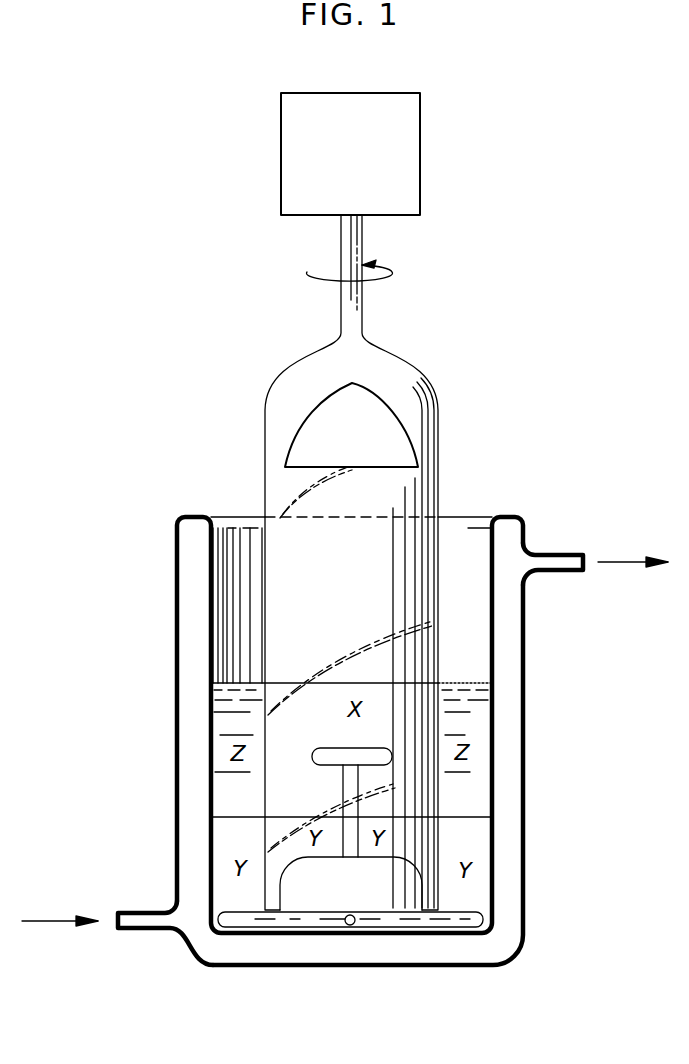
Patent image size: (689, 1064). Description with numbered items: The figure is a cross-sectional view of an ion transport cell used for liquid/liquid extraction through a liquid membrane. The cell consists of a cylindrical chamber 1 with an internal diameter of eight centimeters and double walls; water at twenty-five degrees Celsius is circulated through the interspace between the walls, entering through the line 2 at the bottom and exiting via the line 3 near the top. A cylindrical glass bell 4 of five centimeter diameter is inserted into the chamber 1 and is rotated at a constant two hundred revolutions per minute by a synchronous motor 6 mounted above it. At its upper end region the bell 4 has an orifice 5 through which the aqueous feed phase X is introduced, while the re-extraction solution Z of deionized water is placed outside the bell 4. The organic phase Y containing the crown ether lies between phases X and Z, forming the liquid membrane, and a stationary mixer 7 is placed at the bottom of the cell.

The cylindrical chamber 1 is at (524, 717).
The line 2 is at (118, 920).
The line 3 is at (583, 557).
The cylindrical glass bell 4 is at (440, 478).
The orifice 5 is at (316, 414).
The synchronous motor 6 is at (344, 170).
The stationary mixer 7 is at (410, 915).